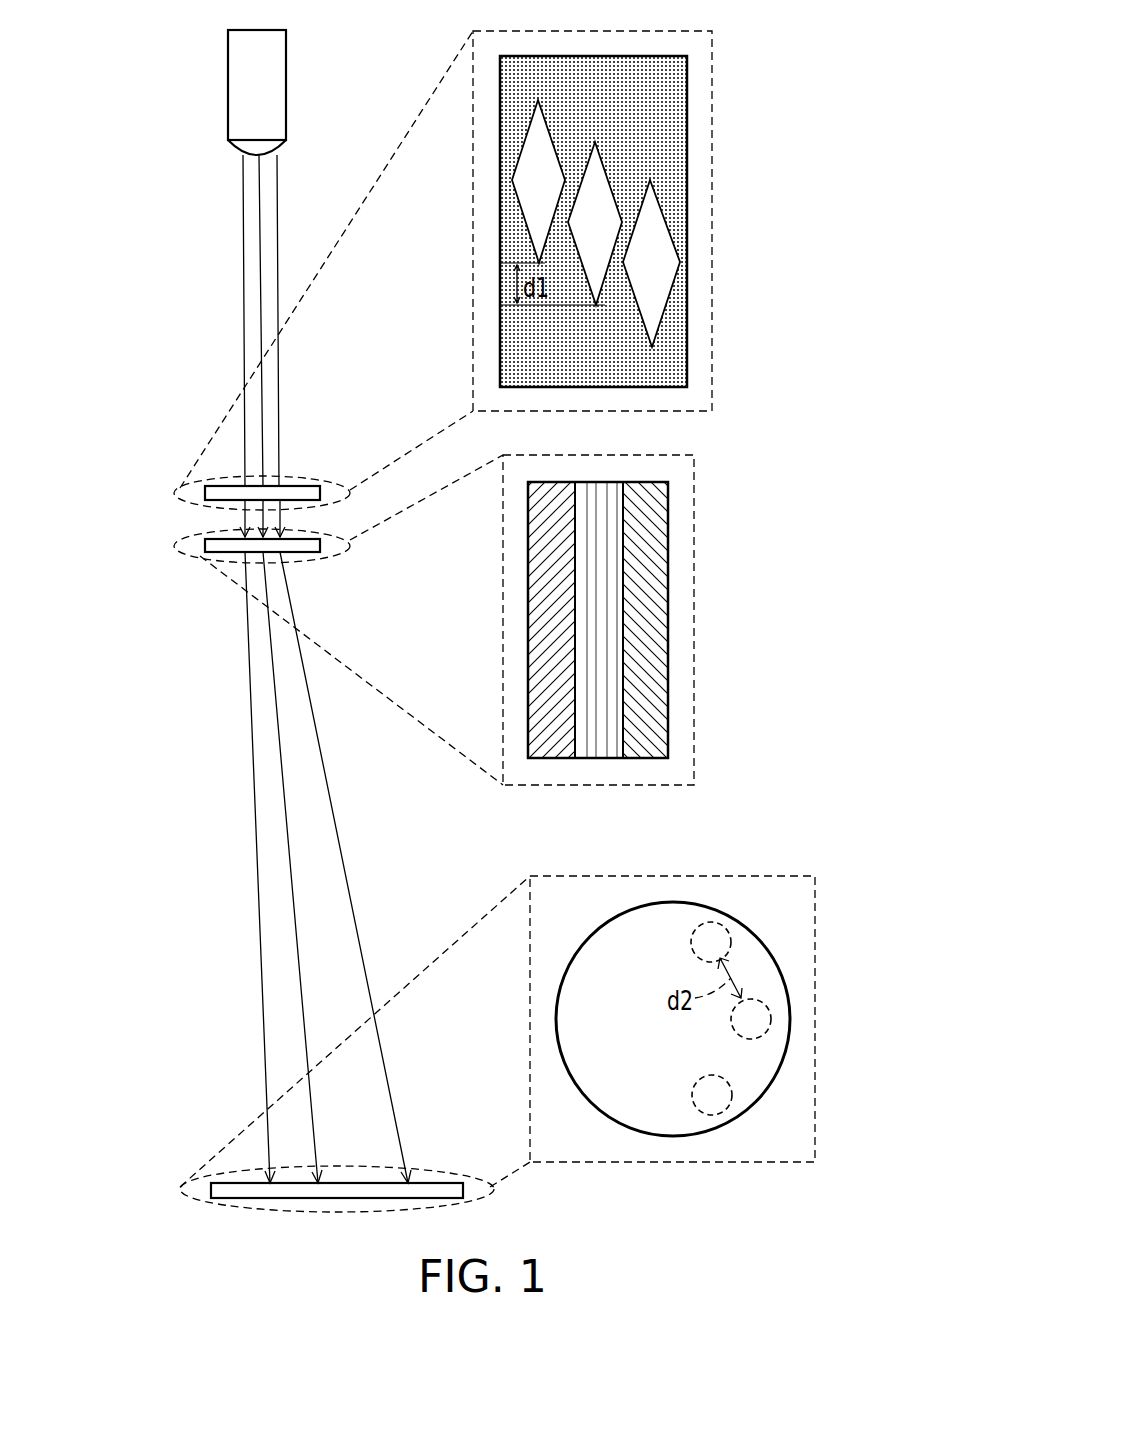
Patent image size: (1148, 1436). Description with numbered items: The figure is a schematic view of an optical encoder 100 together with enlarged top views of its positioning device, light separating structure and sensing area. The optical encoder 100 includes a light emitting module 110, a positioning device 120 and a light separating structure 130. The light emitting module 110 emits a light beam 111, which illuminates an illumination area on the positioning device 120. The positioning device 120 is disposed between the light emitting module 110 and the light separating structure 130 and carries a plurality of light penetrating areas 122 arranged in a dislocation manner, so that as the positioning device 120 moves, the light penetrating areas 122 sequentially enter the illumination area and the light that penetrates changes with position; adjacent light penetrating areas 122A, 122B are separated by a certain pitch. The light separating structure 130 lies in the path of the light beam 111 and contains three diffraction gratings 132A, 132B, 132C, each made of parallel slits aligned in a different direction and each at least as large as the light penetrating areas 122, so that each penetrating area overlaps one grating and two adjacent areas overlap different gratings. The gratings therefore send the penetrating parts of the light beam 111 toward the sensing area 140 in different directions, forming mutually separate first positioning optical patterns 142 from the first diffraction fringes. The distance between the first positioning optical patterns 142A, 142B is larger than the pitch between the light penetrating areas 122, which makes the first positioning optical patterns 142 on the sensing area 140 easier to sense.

The optical encoder 100 is at (877, 1245).
The light emitting module 110 is at (228, 95).
The light beam 111 is at (243, 257).
The positioning device 120 is at (220, 497).
The light penetrating areas 122 is at (660, 250).
The light penetrating area 122A is at (545, 152).
The light penetrating area 122B is at (600, 186).
The light separating structure 130 is at (220, 550).
The diffraction grating 132A is at (558, 742).
The diffraction grating 132B is at (596, 745).
The diffraction grating 132C is at (645, 742).
The sensing area 140 is at (300, 1200).
The first positioning optical patterns 142 is at (732, 1087).
The first positioning optical pattern 142A is at (731, 932).
The first positioning optical pattern 142B is at (771, 1010).